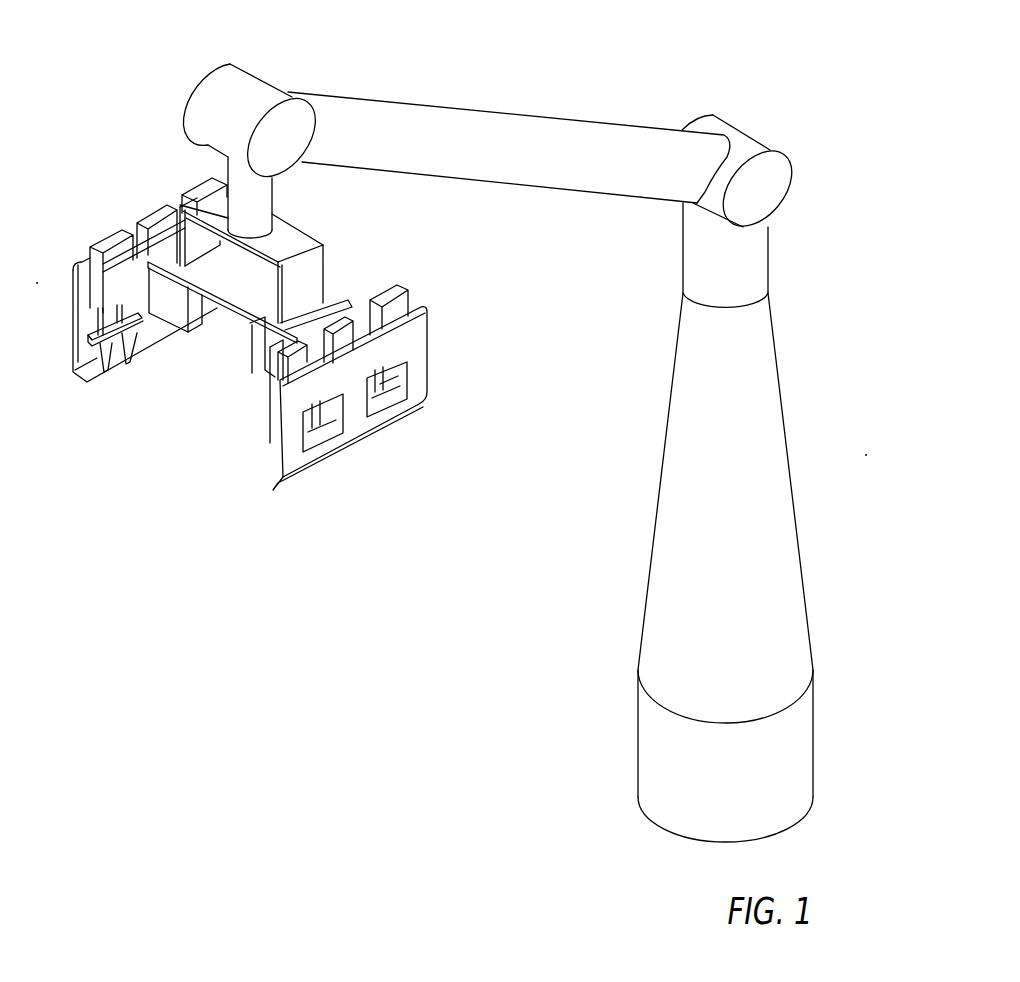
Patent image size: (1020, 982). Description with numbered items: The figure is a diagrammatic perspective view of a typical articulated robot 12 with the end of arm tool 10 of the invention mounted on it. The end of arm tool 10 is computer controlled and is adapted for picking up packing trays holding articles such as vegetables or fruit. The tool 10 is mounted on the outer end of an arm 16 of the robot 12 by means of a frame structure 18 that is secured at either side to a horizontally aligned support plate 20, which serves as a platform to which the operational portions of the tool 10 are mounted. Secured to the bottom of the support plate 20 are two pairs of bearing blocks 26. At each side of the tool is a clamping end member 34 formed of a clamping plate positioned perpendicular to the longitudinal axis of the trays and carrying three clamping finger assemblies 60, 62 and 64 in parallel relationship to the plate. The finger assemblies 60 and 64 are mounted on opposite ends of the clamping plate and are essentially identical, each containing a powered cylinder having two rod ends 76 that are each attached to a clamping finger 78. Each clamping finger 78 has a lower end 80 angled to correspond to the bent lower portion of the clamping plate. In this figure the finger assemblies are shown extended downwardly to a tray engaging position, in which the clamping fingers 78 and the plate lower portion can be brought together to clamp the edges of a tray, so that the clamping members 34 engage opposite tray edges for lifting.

The end of arm tool 10 is at (397, 492).
The articulated robot 12 is at (655, 508).
The arm 16 is at (502, 110).
The frame structure 18 is at (312, 232).
The support plate 20 is at (247, 300).
The bearing blocks 26 is at (165, 312).
The clamping end member 34 is at (420, 338).
The clamping finger assembly 60 is at (102, 238).
The clamping finger assembly 62 is at (153, 208).
The clamping finger assembly 64 is at (195, 185).
The rod end 76 is at (95, 337).
The clamping finger 78 is at (117, 360).
The lower end 80 is at (113, 373).